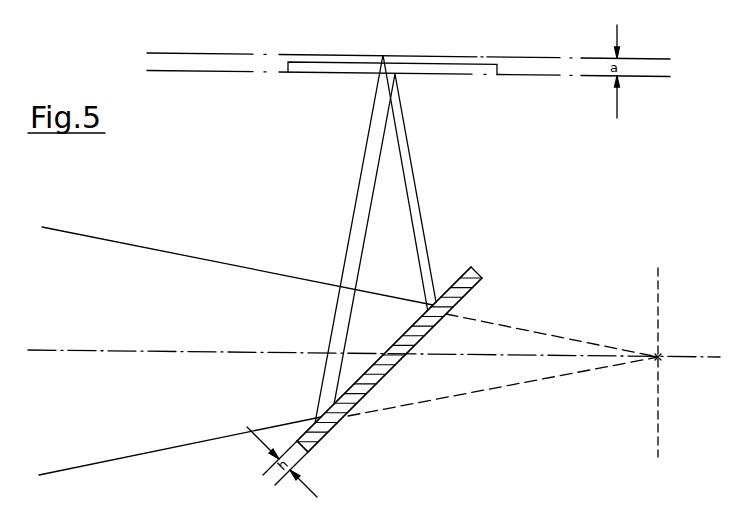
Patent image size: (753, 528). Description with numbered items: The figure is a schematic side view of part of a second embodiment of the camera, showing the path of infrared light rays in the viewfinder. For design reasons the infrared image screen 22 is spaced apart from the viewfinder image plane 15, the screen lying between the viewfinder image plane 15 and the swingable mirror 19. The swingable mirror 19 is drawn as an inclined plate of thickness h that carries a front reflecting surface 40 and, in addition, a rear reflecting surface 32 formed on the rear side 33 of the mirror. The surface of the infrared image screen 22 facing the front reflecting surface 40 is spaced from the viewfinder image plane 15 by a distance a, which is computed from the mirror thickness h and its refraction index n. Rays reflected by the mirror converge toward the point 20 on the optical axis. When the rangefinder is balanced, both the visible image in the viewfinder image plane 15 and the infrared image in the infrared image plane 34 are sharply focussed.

The viewfinder image plane 15 is at (408, 56).
The infrared image screen 22 is at (328, 71).
The infrared image plane 34 is at (520, 75).
The swingable mirror 19 is at (478, 274).
The focal point 20 is at (660, 355).
The front reflecting surface 40 is at (357, 381).
The rear side of the mirror 33 is at (415, 343).
The rear reflecting surface 32 is at (378, 383).